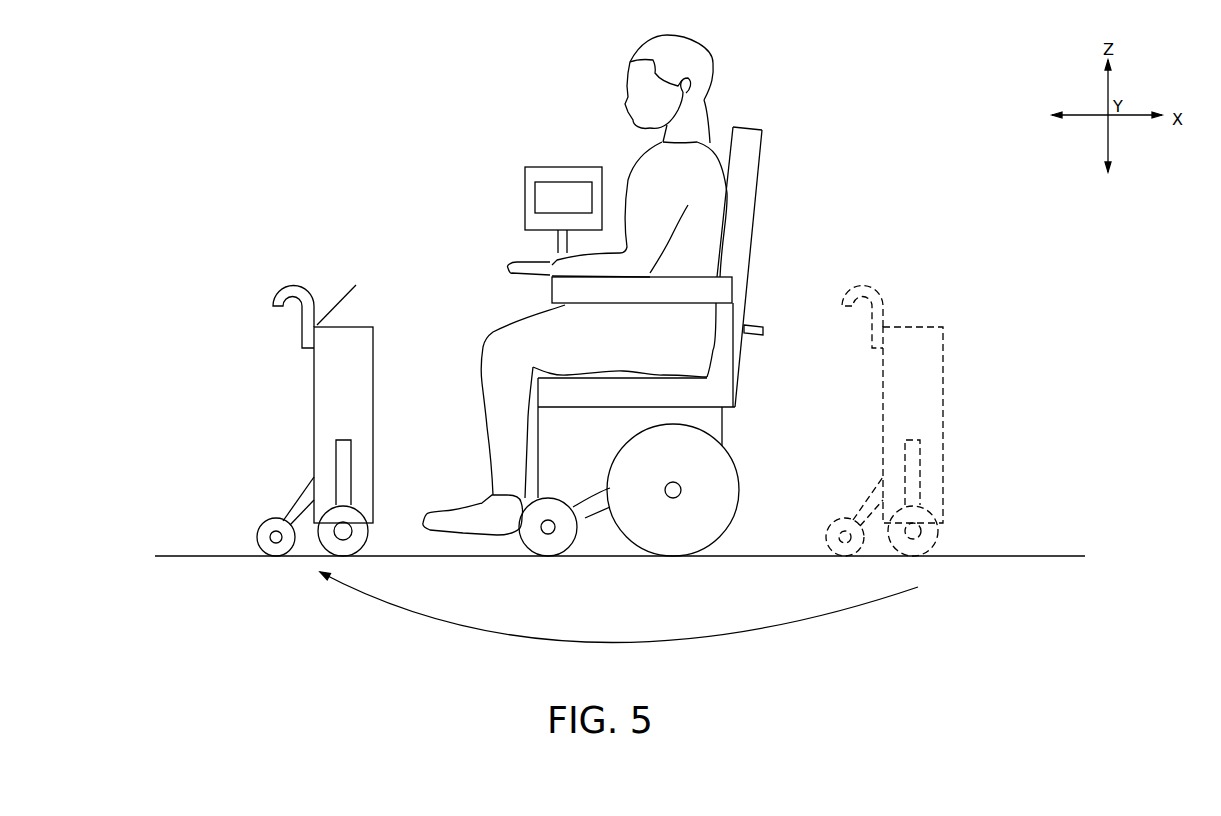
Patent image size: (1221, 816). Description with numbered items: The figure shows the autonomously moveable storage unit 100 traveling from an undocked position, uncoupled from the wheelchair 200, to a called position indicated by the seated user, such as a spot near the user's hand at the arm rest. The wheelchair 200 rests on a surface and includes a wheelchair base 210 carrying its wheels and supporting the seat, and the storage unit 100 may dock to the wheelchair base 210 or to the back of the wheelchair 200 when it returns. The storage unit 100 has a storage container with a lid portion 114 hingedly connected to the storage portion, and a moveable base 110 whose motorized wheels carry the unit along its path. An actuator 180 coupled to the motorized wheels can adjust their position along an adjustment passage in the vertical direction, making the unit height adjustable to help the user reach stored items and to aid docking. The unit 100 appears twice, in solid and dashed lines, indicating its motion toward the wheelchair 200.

The autonomously moveable storage unit 100 is at (631, 393).
The moveable base 110 is at (384, 562).
The lid portion 114 is at (348, 293).
The actuator 180 is at (828, 628).
The wheelchair 200 is at (698, 297).
The wheelchair base 210 is at (732, 460).